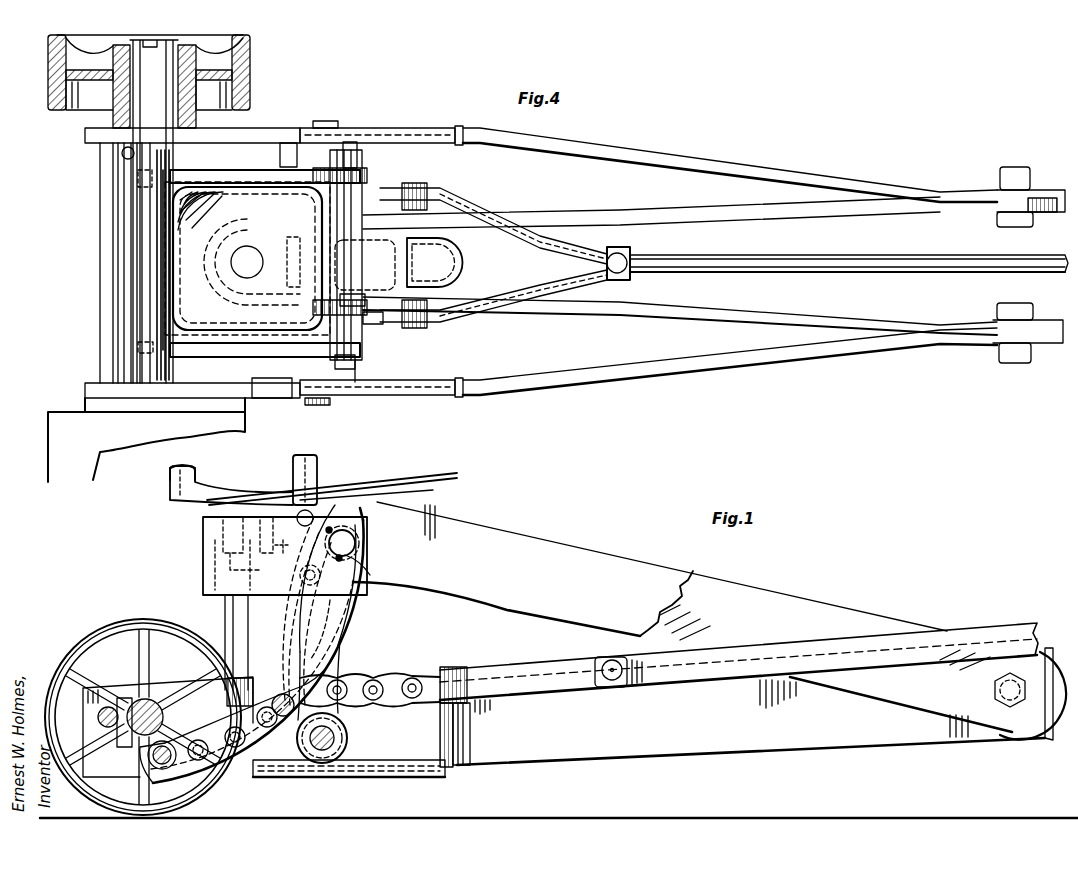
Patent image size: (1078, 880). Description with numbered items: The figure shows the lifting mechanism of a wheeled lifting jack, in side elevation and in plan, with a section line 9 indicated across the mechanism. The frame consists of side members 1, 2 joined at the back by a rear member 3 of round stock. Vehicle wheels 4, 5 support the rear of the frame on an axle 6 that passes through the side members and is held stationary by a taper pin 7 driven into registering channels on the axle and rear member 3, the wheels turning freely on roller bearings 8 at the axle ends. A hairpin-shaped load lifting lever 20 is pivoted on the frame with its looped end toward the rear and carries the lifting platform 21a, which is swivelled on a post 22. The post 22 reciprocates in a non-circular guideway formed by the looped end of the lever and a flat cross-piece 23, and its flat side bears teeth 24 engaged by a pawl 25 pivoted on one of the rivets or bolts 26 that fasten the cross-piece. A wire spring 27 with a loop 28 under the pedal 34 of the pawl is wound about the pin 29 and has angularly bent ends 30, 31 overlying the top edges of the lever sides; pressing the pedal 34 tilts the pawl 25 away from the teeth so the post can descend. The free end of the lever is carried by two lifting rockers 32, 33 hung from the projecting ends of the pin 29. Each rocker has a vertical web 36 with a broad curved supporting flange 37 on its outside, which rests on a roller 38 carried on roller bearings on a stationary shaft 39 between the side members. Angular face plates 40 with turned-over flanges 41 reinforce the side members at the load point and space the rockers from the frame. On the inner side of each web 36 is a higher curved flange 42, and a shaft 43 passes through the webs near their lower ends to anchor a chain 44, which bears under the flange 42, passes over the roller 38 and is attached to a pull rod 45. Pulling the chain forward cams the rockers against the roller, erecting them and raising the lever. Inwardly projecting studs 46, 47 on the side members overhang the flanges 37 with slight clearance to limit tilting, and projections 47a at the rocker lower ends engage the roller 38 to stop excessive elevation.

In FIG. 4, the side member 1 is at (692, 372).
In FIG. 4, the side member 2 is at (800, 170).
In FIG. 1, the side member 2 is at (730, 748).
In FIG. 4, the rear member 3 is at (100, 255).
In FIG. 1, the rear member 3 is at (110, 730).
In FIG. 4, the vehicle wheel 4 is at (58, 437).
In FIG. 4, the vehicle wheel 5 is at (58, 118).
In FIG. 1, the vehicle wheel 5 is at (105, 633).
In FIG. 4, the axle 6 is at (130, 208).
In FIG. 1, the axle 6 is at (150, 702).
In FIG. 4, the taper pin 7 is at (122, 157).
In FIG. 1, the taper pin 7 is at (119, 700).
In FIG. 4, the roller bearings 8 is at (178, 97).
In FIG. 1, the section line 9 is at (322, 765).
In FIG. 4, the load lifting lever 20 is at (658, 318).
In FIG. 1, the load lifting lever 20 is at (620, 550).
In FIG. 4, the lifting platform 21a is at (223, 220).
In FIG. 1, the lifting platform 21a is at (172, 482).
In FIG. 1, the post 22 is at (230, 605).
In FIG. 1, the flat cross-piece 23 is at (306, 590).
In FIG. 1, the teeth 24 is at (286, 549).
In FIG. 4, the pawl 25 is at (288, 251).
In FIG. 1, the pawl 25 is at (298, 478).
In FIG. 4, the rivets or bolts 26 is at (289, 272).
In FIG. 1, the rivets or bolts 26 is at (310, 510).
In FIG. 4, the wire spring 27 is at (393, 258).
In FIG. 1, the wire spring 27 is at (410, 494).
In FIG. 4, the loop 28 is at (349, 298).
In FIG. 1, the loop 28 is at (358, 557).
In FIG. 4, the pin 29 is at (356, 362).
In FIG. 1, the pin 29 is at (360, 543).
In FIG. 4, the bent spring end 30 is at (372, 318).
In FIG. 4, the bent spring end 31 is at (377, 215).
In FIG. 4, the lifting rocker 32 is at (250, 348).
In FIG. 1, the lifting rocker 32 is at (356, 600).
In FIG. 4, the lifting rocker 33 is at (368, 171).
In FIG. 4, the pedal 34 is at (460, 245).
In FIG. 1, the pedal 34 is at (450, 474).
In FIG. 4, the web 36 is at (240, 170).
In FIG. 1, the web 36 is at (290, 650).
In FIG. 4, the curved supporting flange 37 is at (196, 152).
In FIG. 1, the curved supporting flange 37 is at (358, 616).
In FIG. 4, the roller 38 is at (356, 382).
In FIG. 1, the roller 38 is at (348, 740).
In FIG. 4, the stationary shaft 39 is at (318, 403).
In FIG. 1, the stationary shaft 39 is at (318, 758).
In FIG. 4, the angular face plates 40 is at (440, 143).
In FIG. 1, the angular face plates 40 is at (470, 748).
In FIG. 4, the turned-over flanges 41 is at (460, 126).
In FIG. 1, the turned-over flanges 41 is at (452, 762).
In FIG. 4, the curved flange 42 is at (182, 224).
In FIG. 1, the curved flange 42 is at (312, 645).
In FIG. 4, the shaft 43 is at (155, 268).
In FIG. 1, the shaft 43 is at (155, 764).
In FIG. 4, the chain 44 is at (410, 185).
In FIG. 1, the chain 44 is at (378, 679).
In FIG. 4, the pull rod 45 is at (850, 272).
In FIG. 1, the pull rod 45 is at (977, 628).
In FIG. 4, the stud 46 is at (278, 390).
In FIG. 1, the stud 46 is at (282, 692).
In FIG. 4, the stud 47 is at (298, 155).
In FIG. 1, the projections 47a is at (158, 782).